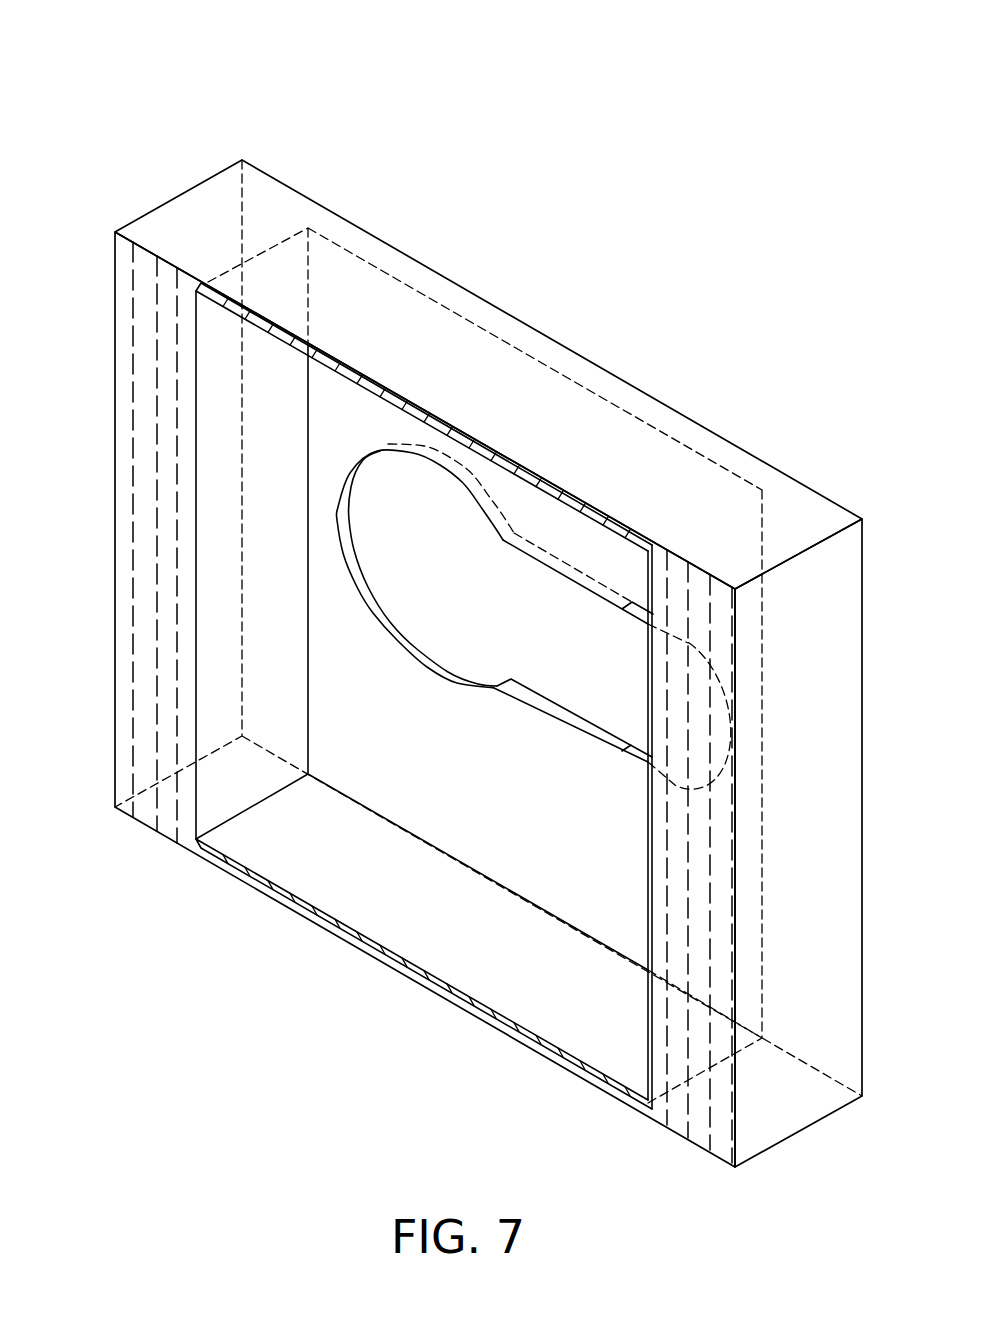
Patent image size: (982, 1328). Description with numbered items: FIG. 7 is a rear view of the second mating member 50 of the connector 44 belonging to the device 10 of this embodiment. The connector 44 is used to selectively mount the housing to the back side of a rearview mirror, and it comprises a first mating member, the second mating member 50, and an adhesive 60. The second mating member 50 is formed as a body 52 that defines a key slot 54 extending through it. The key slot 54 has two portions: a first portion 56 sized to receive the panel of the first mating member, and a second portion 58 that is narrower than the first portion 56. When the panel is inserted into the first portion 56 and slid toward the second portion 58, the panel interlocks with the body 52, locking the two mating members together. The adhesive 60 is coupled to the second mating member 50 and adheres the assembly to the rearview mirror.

The device 10 is at (557, 210).
The connector 44 is at (306, 165).
The second mating member 50 is at (790, 415).
The body 52 is at (528, 417).
The key slot 54 is at (529, 650).
The first portion 56 is at (422, 540).
The second portion 58 is at (592, 640).
The adhesive 60 is at (118, 612).